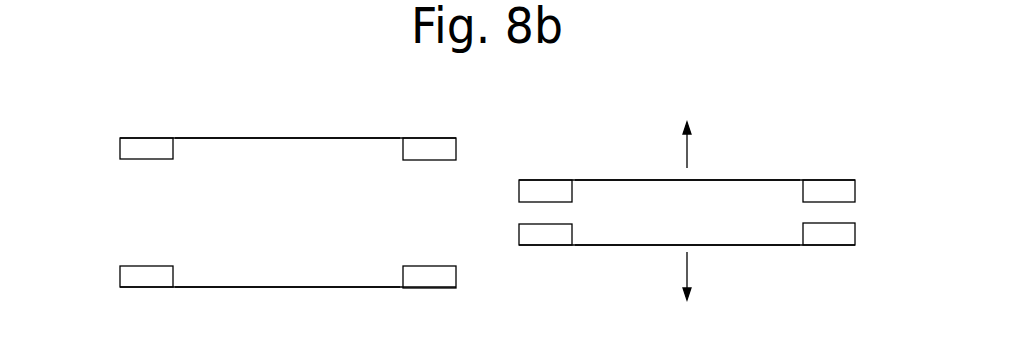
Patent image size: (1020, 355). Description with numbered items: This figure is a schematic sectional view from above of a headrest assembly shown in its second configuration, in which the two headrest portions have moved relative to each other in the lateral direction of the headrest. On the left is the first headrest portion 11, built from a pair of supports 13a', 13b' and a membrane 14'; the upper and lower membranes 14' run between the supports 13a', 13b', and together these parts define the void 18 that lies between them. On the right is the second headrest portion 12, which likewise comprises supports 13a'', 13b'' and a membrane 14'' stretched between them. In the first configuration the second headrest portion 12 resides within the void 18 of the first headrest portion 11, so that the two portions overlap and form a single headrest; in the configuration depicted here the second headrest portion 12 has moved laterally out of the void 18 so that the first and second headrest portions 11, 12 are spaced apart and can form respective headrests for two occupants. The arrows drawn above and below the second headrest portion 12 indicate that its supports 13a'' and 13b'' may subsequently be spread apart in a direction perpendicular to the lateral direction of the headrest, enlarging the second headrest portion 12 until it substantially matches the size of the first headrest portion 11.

The void 18 is at (256, 207).
The membrane 14' is at (288, 209).
The support 13a' is at (115, 188).
The support 13b' is at (408, 207).
The first headrest portion 11 is at (203, 139).
The membrane 14'' is at (687, 211).
The support 13a'' is at (550, 211).
The support 13b'' is at (837, 211).
The second headrest portion 12 is at (618, 181).